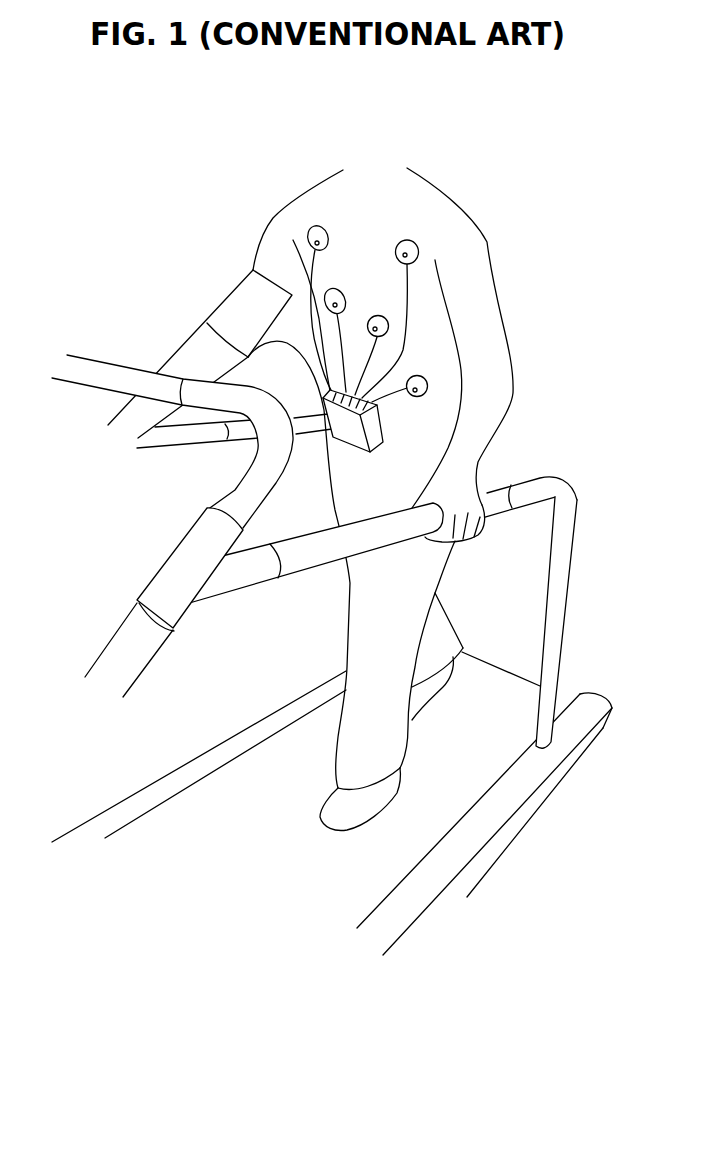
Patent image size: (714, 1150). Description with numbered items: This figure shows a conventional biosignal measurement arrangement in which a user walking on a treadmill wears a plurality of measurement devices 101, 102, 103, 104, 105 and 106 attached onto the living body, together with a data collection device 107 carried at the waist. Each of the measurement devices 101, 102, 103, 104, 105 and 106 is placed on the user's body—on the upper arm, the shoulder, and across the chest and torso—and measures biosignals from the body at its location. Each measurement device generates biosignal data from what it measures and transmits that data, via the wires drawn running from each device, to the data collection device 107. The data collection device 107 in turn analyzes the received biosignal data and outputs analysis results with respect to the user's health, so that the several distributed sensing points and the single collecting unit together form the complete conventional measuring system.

The measurement device 101 is at (232, 307).
The measurement device 102 is at (313, 228).
The measurement device 103 is at (326, 290).
The measurement device 104 is at (418, 245).
The measurement device 105 is at (388, 321).
The measurement device 106 is at (427, 381).
The data collection device 107 is at (380, 428).